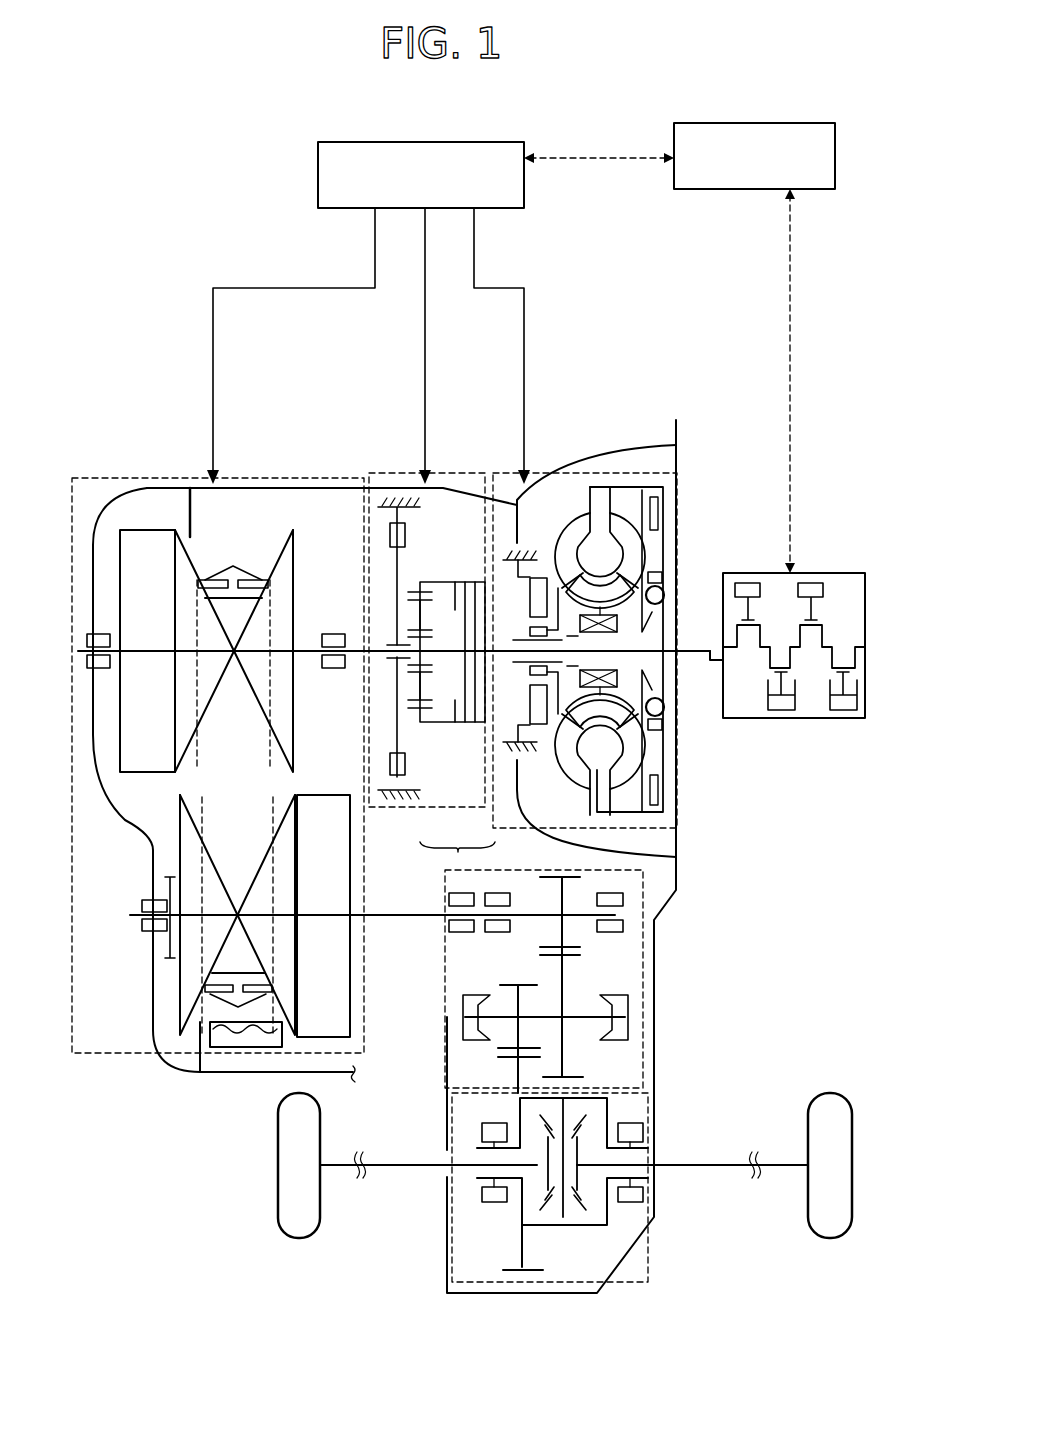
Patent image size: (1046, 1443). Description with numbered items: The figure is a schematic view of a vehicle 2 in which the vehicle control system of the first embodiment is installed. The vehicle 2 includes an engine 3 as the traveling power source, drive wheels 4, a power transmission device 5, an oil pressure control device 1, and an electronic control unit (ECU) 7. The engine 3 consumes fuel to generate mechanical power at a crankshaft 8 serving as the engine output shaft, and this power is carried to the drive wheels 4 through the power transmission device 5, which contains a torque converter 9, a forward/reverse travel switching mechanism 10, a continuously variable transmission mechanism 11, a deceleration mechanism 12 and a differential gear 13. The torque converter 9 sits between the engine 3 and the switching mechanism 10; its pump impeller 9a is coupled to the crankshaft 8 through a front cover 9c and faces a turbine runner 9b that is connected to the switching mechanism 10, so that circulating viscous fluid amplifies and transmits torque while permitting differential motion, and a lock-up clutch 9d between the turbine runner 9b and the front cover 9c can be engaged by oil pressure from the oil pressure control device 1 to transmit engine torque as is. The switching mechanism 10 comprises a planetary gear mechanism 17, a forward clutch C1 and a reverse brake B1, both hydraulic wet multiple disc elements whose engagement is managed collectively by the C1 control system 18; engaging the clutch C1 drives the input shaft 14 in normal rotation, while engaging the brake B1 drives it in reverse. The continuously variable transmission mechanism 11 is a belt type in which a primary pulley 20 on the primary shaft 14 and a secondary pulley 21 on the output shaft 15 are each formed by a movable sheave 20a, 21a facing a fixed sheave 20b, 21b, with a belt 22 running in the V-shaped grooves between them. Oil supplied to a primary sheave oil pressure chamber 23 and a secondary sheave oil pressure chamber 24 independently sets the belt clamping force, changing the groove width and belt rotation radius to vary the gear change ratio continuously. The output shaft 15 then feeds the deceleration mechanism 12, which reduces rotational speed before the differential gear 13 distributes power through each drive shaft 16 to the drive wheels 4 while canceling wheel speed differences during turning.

The oil pressure control device 1 is at (468, 152).
The vehicle 2 is at (120, 245).
The engine 3 is at (826, 574).
The drive wheels 4 is at (300, 1238).
The power transmission device 5 is at (88, 450).
The electronic control unit (ECU) 7 is at (808, 126).
The crankshaft 8 is at (704, 646).
The torque converter 9 is at (592, 472).
The pump impeller 9a is at (579, 539).
The turbine runner 9b is at (620, 498).
The front cover 9c is at (680, 747).
The lock-up clutch 9d is at (674, 803).
The forward/reverse travel switching mechanism 10 is at (460, 474).
The continuously variable transmission mechanism 11 is at (317, 474).
The deceleration mechanism 12 is at (656, 957).
The differential gear 13 is at (654, 1104).
The input shaft 14 is at (350, 664).
The output shaft 15 is at (410, 915).
The drive shaft 16 is at (404, 1164).
The planetary gear mechanism 17 is at (444, 576).
The C1 control system 18 is at (457, 858).
The forward/reverse travel switching brake B1 is at (416, 668).
The forward/reverse travel switching clutch C1 is at (476, 710).
The primary pulley 20 is at (212, 561).
The movable sheave 20a is at (180, 540).
The fixed sheave 20b is at (282, 549).
The secondary pulley 21 is at (232, 874).
The movable sheave 21a is at (270, 837).
The fixed sheave 21b is at (205, 802).
The belt 22 is at (242, 571).
The primary sheave oil pressure chamber 23 is at (138, 546).
The secondary sheave oil pressure chamber 24 is at (321, 807).